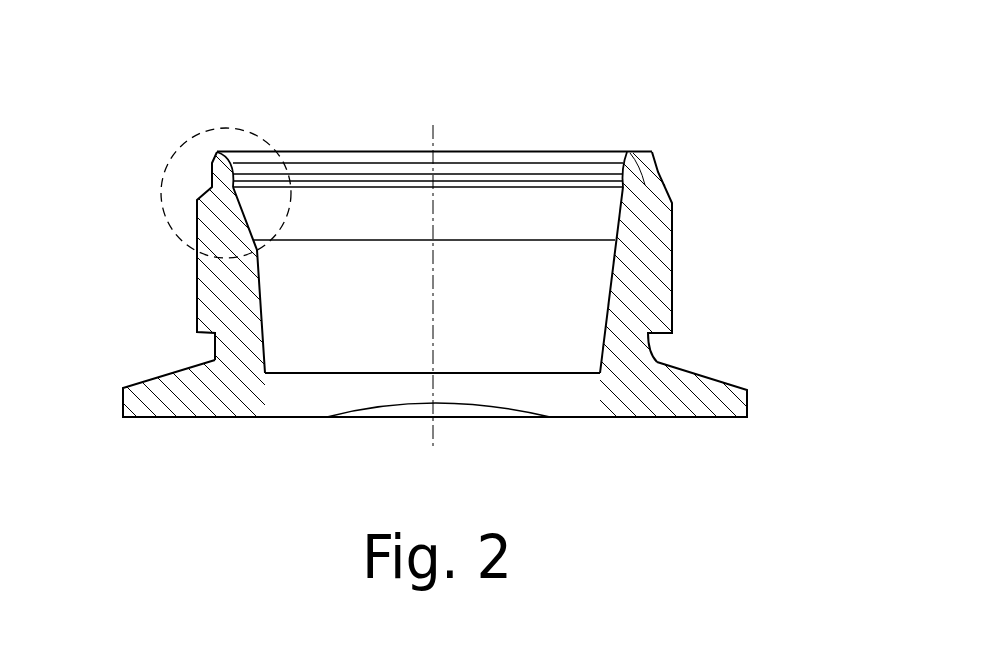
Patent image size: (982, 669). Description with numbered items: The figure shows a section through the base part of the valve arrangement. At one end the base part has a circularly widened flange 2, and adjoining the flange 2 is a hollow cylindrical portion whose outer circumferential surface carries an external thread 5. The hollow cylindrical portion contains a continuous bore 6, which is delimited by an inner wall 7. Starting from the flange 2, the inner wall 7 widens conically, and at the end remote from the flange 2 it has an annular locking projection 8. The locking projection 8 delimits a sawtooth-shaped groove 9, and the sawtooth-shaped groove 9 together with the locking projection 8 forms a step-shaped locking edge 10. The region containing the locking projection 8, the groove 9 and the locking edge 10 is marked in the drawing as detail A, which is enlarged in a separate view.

The flange 2 is at (748, 405).
The external thread 5 is at (652, 260).
The continuous bore 6 is at (498, 148).
The inner wall 7 is at (610, 292).
The annular locking projection 8 is at (623, 157).
The sawtooth-shaped groove 9 is at (635, 172).
The step-shaped locking edge 10 is at (217, 153).
The detail A is at (163, 193).